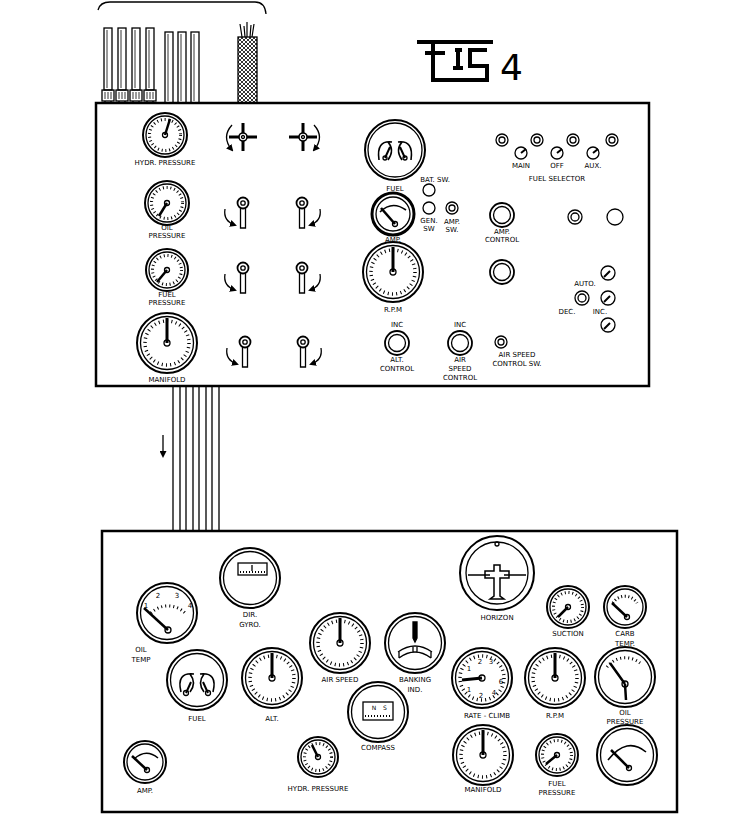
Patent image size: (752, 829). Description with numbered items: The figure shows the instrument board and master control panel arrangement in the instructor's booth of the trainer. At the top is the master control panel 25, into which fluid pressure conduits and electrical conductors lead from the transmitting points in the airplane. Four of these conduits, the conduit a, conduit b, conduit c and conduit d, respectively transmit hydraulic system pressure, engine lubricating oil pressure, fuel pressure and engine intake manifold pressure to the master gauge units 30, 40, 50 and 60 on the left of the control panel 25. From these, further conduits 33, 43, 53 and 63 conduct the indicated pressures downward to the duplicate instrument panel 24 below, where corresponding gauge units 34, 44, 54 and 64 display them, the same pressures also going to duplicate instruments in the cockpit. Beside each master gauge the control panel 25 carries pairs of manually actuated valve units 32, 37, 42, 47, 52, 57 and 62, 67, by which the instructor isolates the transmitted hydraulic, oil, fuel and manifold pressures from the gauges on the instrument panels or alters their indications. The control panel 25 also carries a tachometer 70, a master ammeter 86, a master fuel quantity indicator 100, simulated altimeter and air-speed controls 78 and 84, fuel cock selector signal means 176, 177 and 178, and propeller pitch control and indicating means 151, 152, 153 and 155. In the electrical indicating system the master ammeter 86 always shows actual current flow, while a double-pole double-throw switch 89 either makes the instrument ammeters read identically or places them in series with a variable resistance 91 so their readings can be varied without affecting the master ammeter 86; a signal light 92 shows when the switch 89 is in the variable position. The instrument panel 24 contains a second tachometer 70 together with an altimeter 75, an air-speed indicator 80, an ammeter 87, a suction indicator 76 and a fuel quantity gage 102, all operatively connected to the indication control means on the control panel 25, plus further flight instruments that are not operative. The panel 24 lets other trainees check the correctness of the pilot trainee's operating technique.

The conduit a is at (88, 64).
The conduit b is at (95, 65).
The conduit c is at (102, 65).
The conduit d is at (109, 65).
The conduit 33 is at (164, 54).
The conduit 43 is at (189, 54).
The conduit 53 is at (209, 54).
The conduit 63 is at (232, 60).
The master control panel 25 is at (388, 244).
The duplicate instrument panel 24 is at (406, 671).
The master gauge unit 30 is at (153, 135).
The valve unit 32 is at (248, 150).
The valve unit 37 is at (298, 137).
The master gauge unit 40 is at (152, 203).
The valve unit 42 is at (243, 216).
The valve unit 47 is at (310, 208).
The master gauge unit 50 is at (151, 270).
The valve unit 52 is at (244, 272).
The valve unit 57 is at (312, 272).
The master gauge unit 60 is at (156, 343).
The valve unit 62 is at (238, 346).
The valve unit 67 is at (307, 346).
The master fuel quantity indicator 100 is at (409, 150).
The master ammeter 86 is at (384, 209).
The double-pole double-throw switch 89 is at (462, 194).
The variable resistance 91 is at (494, 208).
The signal light 92 is at (568, 207).
The tachometer 70 is at (474, 475).
The simulated altimeter control 78 is at (382, 344).
The simulated air-speed control 84 is at (474, 334).
The propeller pitch control and indicating means 155 is at (564, 285).
The propeller pitch control and indicating means 151 is at (625, 273).
The propeller pitch control and indicating means 152 is at (625, 298).
The propeller pitch control and indicating means 153 is at (625, 325).
The fuel cock selector signal means 176 is at (556, 134).
The fuel cock selector signal means 177 is at (503, 155).
The fuel cock selector signal means 178 is at (615, 156).
The fuel quantity gage 102 is at (197, 671).
The altimeter 75 is at (272, 668).
The air-speed indicator 80 is at (343, 634).
The ammeter 87 is at (145, 754).
The gauge unit 34 is at (303, 757).
The gauge unit 64 is at (468, 755).
The gauge unit 54 is at (548, 750).
The suction indicator 76 is at (568, 595).
The gauge unit 44 is at (650, 677).